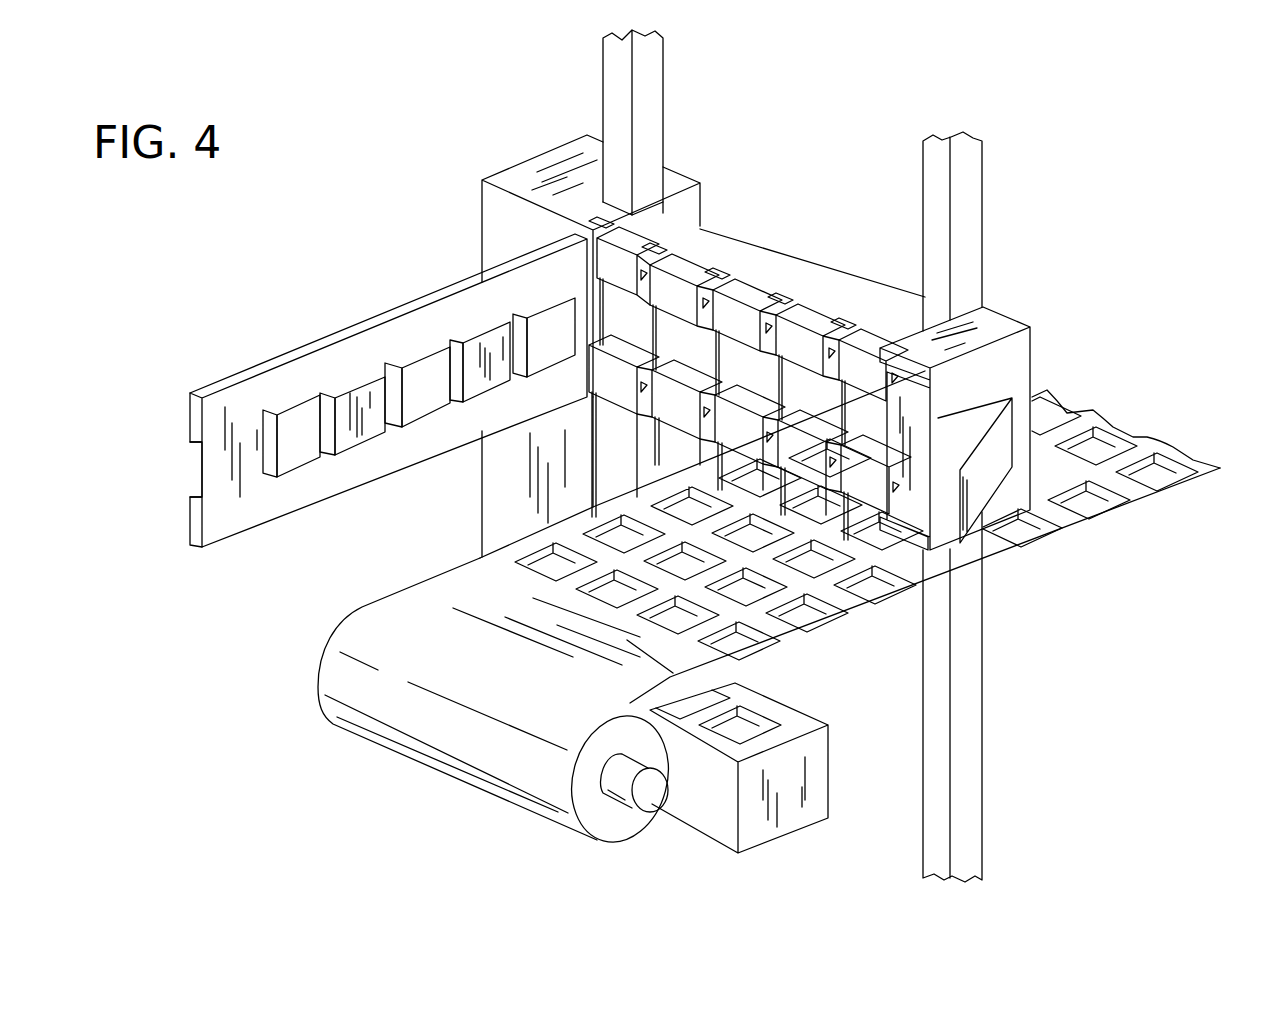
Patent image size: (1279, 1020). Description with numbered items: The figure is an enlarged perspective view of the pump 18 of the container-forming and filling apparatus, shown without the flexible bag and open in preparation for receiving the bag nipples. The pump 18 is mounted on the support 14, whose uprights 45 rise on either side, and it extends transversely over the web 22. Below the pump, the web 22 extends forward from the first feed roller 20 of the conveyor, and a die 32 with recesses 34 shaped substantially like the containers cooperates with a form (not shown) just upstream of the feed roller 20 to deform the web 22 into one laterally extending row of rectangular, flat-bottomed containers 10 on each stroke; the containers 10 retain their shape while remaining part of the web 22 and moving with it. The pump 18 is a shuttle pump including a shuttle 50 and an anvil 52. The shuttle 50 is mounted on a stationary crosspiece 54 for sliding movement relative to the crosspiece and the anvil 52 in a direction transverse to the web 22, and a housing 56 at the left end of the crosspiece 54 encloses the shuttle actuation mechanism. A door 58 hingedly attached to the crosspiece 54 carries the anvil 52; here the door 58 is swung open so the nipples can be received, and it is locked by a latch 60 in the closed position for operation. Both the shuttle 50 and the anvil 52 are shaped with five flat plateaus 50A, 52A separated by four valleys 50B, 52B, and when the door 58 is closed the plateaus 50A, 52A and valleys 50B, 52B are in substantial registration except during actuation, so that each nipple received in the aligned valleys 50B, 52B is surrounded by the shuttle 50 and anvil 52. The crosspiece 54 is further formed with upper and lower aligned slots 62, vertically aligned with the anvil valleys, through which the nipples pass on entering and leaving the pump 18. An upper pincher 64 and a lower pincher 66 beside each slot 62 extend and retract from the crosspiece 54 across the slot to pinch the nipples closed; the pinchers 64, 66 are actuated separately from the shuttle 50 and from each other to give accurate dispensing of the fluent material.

The container 10 is at (1090, 500).
The support 14 is at (1010, 256).
The pump 18 is at (505, 164).
The first feed roller 20 is at (650, 790).
The web 22 is at (1147, 443).
The die 32 is at (792, 818).
The recess 34 is at (752, 722).
The upright 45 is at (603, 82).
The shuttle 50 is at (620, 320).
The plateau 50A is at (628, 338).
The valley 50B is at (680, 262).
The anvil 52 is at (350, 377).
The plateau 52A is at (270, 412).
The valley 52B is at (521, 327).
The crosspiece 54 is at (668, 214).
The housing 56 is at (597, 147).
The door 58 is at (200, 392).
The latch 60 is at (993, 483).
The slot 62 is at (645, 272).
The upper pincher 64 is at (655, 225).
The lower pincher 66 is at (643, 388).